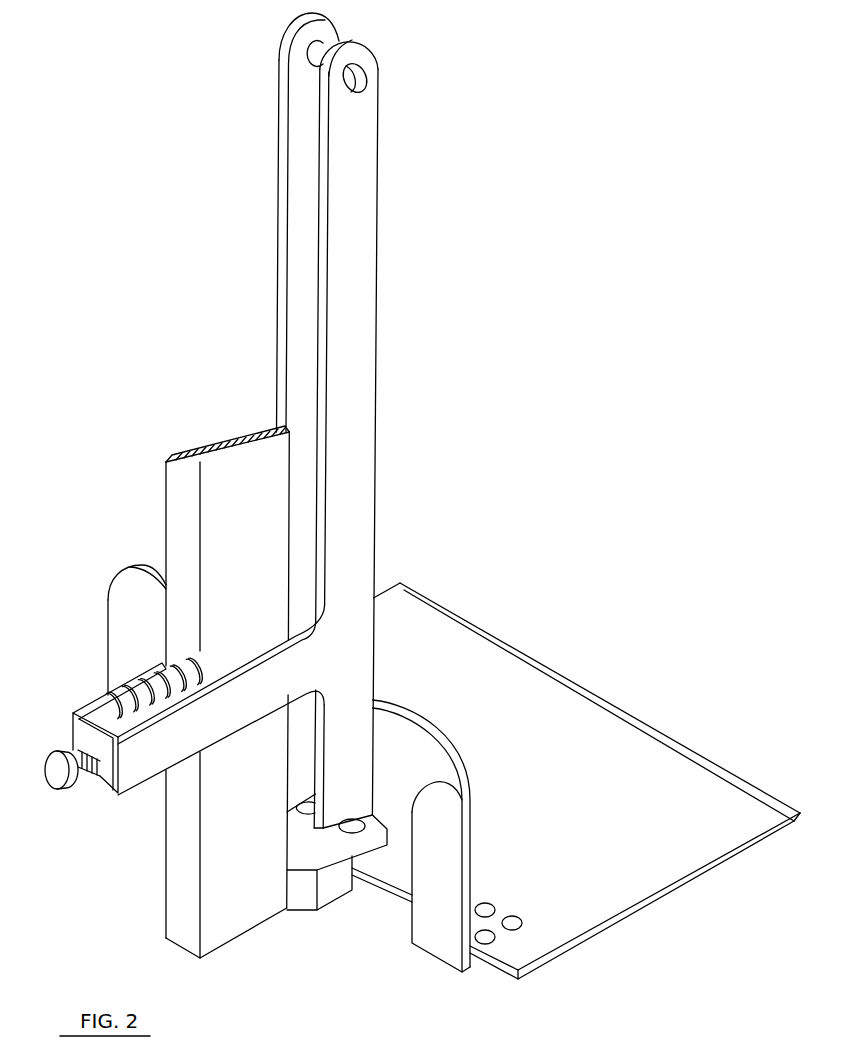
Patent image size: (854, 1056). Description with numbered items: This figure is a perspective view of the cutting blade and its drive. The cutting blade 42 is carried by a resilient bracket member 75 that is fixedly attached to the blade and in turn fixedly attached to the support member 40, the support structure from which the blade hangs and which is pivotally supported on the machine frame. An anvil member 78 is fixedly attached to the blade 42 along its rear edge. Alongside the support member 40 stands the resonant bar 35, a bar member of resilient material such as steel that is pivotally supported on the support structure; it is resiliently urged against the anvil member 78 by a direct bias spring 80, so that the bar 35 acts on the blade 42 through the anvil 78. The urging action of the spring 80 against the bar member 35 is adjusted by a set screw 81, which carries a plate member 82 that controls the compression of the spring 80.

The resonant bar 35 is at (246, 468).
The support structure 40 is at (356, 378).
The cutting blade 42 is at (652, 762).
The resilient bracket member 75 is at (433, 767).
The anvil member 78 is at (333, 882).
The spring 80 is at (142, 680).
The set screw 81 is at (62, 778).
The plate member 82 is at (108, 712).